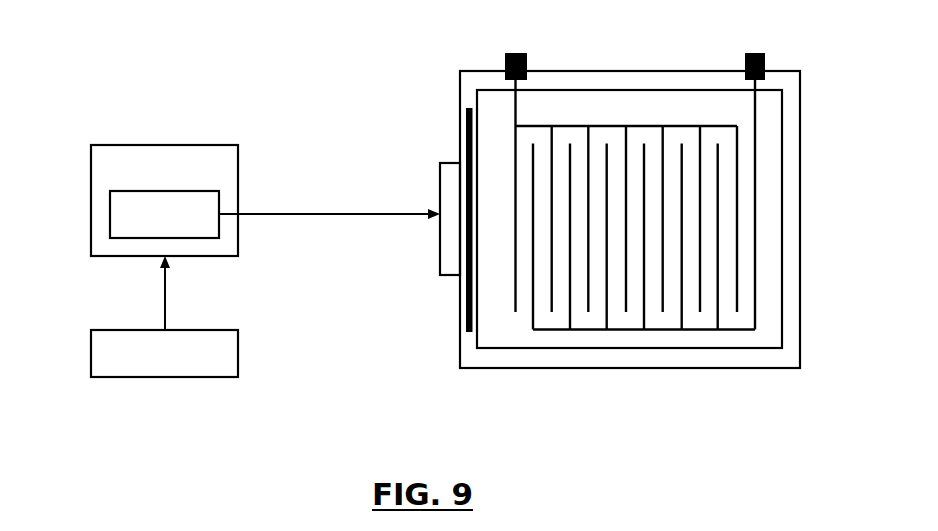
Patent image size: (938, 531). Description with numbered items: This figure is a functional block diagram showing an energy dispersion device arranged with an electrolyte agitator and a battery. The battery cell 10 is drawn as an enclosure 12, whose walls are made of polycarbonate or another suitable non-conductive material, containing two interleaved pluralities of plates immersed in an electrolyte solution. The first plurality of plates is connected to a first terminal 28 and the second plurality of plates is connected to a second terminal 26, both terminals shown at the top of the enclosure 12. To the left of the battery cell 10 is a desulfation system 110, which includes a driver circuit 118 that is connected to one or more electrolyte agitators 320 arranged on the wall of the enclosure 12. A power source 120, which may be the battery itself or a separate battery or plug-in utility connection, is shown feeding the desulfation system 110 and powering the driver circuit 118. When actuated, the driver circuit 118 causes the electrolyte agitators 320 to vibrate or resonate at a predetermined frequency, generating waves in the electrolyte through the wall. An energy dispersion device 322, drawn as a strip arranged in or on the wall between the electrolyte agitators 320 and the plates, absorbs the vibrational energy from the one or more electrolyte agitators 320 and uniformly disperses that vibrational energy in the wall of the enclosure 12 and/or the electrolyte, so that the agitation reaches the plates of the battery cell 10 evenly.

The battery cell 10 is at (416, 47).
The enclosure 12 is at (460, 126).
The second terminal 26 is at (755, 53).
The first terminal 28 is at (517, 53).
The desulfation system 110 is at (227, 95).
The driver circuit 118 is at (108, 218).
The power source 120 is at (165, 377).
The electrolyte agitator 320 is at (440, 268).
The energy dispersion device 322 is at (460, 322).